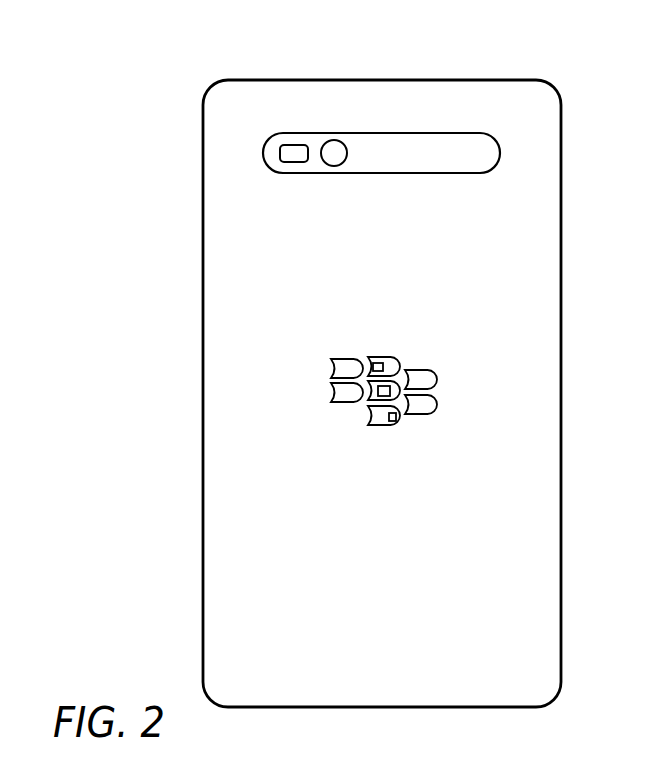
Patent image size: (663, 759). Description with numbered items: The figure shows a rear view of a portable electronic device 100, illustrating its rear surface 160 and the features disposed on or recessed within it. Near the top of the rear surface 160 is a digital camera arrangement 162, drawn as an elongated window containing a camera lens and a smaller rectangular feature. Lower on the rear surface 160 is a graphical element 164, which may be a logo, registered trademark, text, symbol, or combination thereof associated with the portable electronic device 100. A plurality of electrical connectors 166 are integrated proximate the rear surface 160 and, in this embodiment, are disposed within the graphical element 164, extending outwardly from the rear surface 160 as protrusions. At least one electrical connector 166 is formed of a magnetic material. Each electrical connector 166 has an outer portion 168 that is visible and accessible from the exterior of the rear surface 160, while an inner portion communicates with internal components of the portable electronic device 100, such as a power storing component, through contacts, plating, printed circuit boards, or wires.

The portable electronic device 100 is at (335, 360).
The rear surface 160 is at (483, 80).
The digital camera arrangement 162 is at (318, 141).
The graphical element 164 is at (382, 391).
The electrical connector 166 is at (362, 403).
The outer portion 168 is at (393, 422).